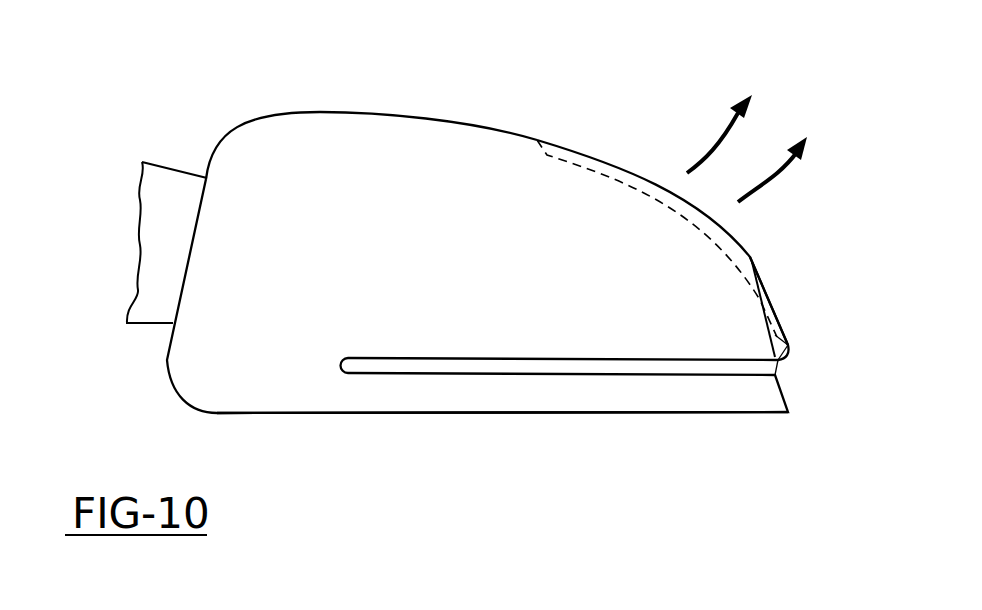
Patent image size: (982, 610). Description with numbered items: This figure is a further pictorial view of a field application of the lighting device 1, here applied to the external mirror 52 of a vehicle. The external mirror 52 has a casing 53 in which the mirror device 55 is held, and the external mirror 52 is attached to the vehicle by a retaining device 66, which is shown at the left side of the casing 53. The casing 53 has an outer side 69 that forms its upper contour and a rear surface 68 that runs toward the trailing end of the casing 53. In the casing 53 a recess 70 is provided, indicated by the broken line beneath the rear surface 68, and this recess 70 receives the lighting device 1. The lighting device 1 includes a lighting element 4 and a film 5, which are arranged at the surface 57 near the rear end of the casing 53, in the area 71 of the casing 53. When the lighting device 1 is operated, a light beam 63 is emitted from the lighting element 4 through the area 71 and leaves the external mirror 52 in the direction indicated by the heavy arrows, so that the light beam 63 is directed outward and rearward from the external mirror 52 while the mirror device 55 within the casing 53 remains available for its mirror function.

The lighting device 1 is at (682, 82).
The lighting element 4 is at (790, 340).
The film 5 is at (793, 360).
The external mirror 52 is at (648, 98).
The casing 53 is at (302, 370).
The mirror device 55 is at (508, 423).
The surface 57 is at (768, 283).
The light beam 63 is at (777, 170).
The retaining device 66 is at (170, 182).
The rear surface 68 is at (522, 133).
The outer side 69 is at (412, 127).
The recess 70 is at (598, 143).
The area 71 is at (807, 297).